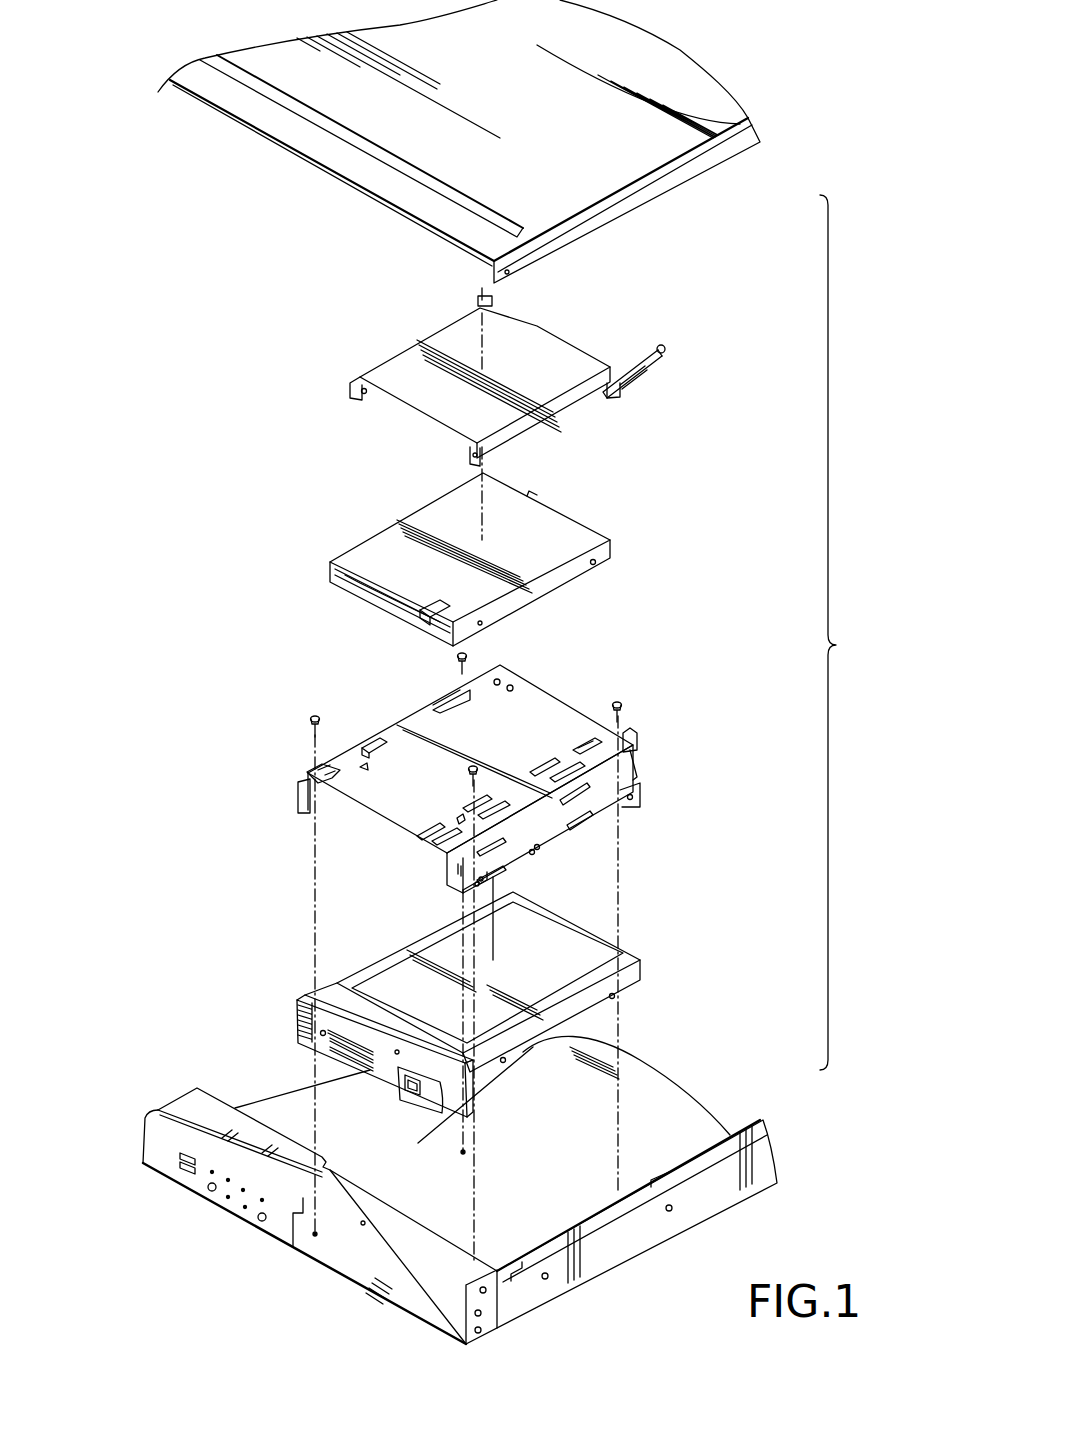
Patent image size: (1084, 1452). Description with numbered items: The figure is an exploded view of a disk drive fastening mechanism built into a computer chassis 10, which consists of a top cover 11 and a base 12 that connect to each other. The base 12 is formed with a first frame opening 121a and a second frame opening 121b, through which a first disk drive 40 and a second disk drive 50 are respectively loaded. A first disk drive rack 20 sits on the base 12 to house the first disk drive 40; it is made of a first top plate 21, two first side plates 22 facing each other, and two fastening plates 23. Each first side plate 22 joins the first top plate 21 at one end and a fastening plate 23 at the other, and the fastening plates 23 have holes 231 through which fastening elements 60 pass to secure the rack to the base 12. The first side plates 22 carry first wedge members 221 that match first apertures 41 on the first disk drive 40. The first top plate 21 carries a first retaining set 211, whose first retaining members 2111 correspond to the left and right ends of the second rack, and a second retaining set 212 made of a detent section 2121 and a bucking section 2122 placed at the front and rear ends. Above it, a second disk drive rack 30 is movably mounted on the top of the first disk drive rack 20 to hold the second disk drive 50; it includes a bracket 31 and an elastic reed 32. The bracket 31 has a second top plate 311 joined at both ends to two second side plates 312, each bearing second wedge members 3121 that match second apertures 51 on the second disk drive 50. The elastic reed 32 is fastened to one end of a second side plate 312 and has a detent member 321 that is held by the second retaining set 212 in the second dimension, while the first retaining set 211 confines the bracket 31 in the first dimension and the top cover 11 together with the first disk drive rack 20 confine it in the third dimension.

The computer chassis 10 is at (513, 672).
The top cover 11 is at (725, 151).
The base 12 is at (476, 1190).
The first frame opening 121a is at (382, 1273).
The second frame opening 121b is at (342, 1226).
The first disk drive rack 20 is at (487, 752).
The first top plate 21 is at (497, 732).
The first retaining set 211 is at (375, 733).
The first retaining member 2111 is at (362, 744).
The second retaining set 212 is at (636, 695).
The detent section 2121 is at (668, 723).
The bucking section 2122 is at (585, 745).
The first side plate 22 is at (361, 833).
The first wedge member 221 is at (298, 795).
The fastening plate 23 is at (575, 818).
The hole 231 is at (645, 774).
The second disk drive rack 30 is at (507, 364).
The bracket 31 is at (437, 375).
The second top plate 311 is at (513, 352).
The second side plate 312 is at (347, 409).
The second wedge member 3121 is at (366, 394).
The elastic reed 32 is at (676, 379).
The detent member 321 is at (665, 356).
The first disk drive 40 is at (468, 1004).
The first aperture 41 is at (506, 1062).
The second disk drive 50 is at (522, 559).
The second aperture 51 is at (635, 581).
The fastening element 60 is at (308, 729).